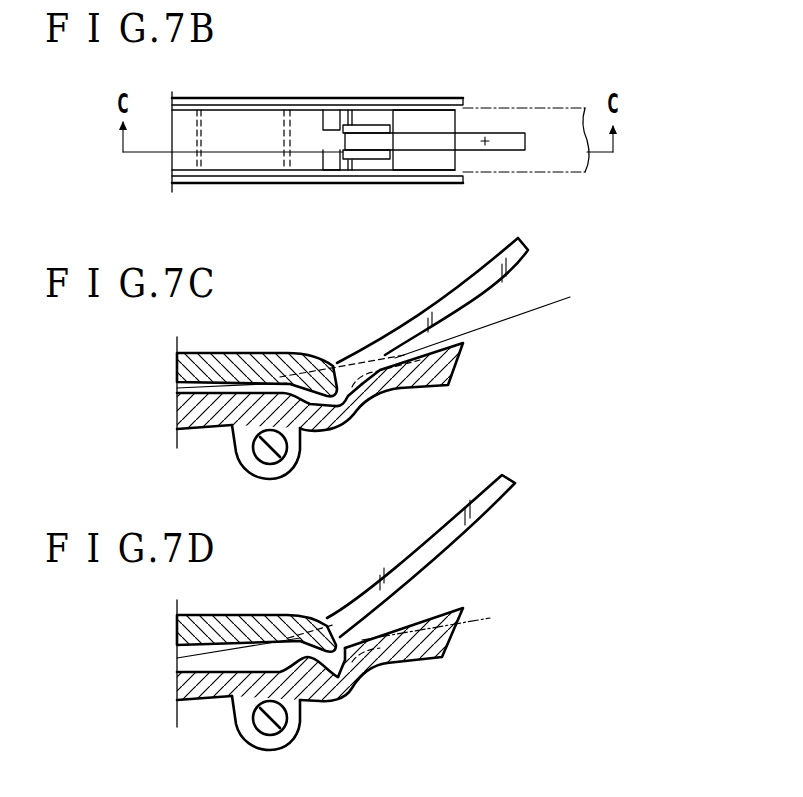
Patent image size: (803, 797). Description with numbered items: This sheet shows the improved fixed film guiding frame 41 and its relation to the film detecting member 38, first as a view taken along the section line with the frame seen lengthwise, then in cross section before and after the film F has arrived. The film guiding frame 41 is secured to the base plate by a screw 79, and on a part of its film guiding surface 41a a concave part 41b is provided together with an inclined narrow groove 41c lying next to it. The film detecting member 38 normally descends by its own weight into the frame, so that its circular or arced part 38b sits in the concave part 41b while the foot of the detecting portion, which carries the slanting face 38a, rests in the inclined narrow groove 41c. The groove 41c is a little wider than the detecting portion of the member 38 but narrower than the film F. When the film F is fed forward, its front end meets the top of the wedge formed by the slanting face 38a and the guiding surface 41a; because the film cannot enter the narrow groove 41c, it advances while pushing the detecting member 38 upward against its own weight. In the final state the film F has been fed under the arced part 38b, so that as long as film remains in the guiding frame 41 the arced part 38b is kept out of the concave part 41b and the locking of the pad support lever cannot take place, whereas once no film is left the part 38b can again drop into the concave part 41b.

In FIG. 7B, the film detecting member 38 is at (260, 127).
In FIG. 7C, the film detecting member 38 is at (238, 362).
In FIG. 7D, the film detecting member 38 is at (220, 623).
In FIG. 7C, the slanting face 38a is at (496, 296).
In FIG. 7D, the slanting face 38a is at (472, 538).
In FIG. 7B, the arced part 38b is at (330, 170).
In FIG. 7C, the arced part 38b is at (321, 400).
In FIG. 7D, the arced part 38b is at (340, 656).
In FIG. 7B, the film guiding frame 41 is at (217, 106).
In FIG. 7C, the film guiding frame 41 is at (203, 418).
In FIG. 7D, the film guiding frame 41 is at (203, 687).
In FIG. 7B, the film guiding surface 41a is at (371, 166).
In FIG. 7C, the film guiding surface 41a is at (464, 344).
In FIG. 7D, the film guiding surface 41a is at (437, 625).
In FIG. 7B, the concave part 41b is at (305, 172).
In FIG. 7C, the concave part 41b is at (322, 399).
In FIG. 7D, the concave part 41b is at (325, 674).
In FIG. 7B, the inclined narrow groove 41c is at (365, 123).
In FIG. 7C, the inclined narrow groove 41c is at (384, 379).
In FIG. 7D, the inclined narrow groove 41c is at (370, 651).
In FIG. 7C, the screw 79 is at (268, 464).
In FIG. 7D, the screw 79 is at (268, 736).
In FIG. 7B, the film F is at (558, 120).
In FIG. 7C, the film F is at (480, 333).
In FIG. 7D, the film F is at (463, 618).